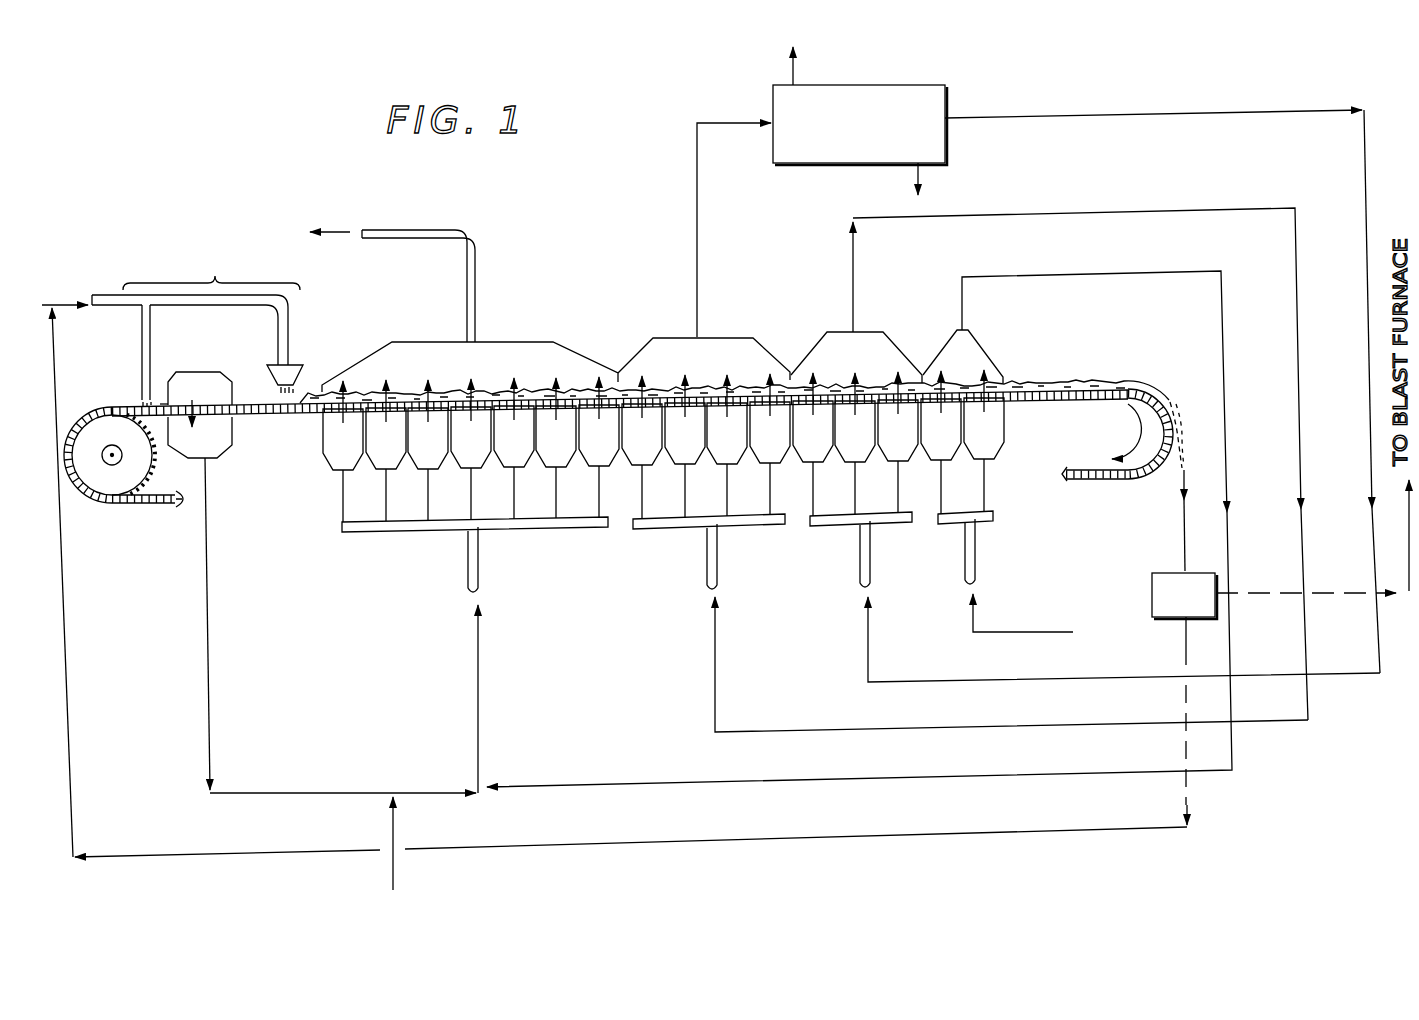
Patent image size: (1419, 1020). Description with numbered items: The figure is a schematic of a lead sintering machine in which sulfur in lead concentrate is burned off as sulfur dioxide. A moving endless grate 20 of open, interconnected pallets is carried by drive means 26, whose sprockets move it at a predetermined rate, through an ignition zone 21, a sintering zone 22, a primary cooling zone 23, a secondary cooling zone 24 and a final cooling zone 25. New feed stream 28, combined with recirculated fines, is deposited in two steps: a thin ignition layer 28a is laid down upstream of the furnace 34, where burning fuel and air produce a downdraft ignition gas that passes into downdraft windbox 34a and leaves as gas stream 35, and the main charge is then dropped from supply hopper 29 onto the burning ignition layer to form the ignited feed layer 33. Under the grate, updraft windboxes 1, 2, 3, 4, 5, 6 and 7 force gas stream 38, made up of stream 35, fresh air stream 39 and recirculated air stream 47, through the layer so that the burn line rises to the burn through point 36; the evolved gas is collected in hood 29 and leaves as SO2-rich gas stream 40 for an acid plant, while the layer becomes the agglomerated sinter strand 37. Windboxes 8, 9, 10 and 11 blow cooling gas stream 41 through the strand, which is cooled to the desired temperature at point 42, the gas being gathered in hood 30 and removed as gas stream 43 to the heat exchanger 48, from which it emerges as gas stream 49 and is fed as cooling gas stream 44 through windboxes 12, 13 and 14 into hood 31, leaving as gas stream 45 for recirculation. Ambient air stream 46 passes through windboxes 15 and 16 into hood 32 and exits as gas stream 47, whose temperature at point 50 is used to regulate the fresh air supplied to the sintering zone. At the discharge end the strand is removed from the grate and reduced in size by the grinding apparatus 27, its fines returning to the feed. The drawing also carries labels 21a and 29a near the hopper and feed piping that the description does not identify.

The updraft windbox 1 is at (343, 451).
The updraft windbox 2 is at (386, 450).
The updraft windbox 3 is at (428, 450).
The updraft windbox 4 is at (471, 449).
The updraft windbox 5 is at (514, 448).
The updraft windbox 6 is at (556, 448).
The updraft windbox 7 is at (599, 447).
The updraft windbox 8 is at (642, 447).
The updraft windbox 9 is at (685, 446).
The updraft windbox 10 is at (727, 445).
The updraft windbox 11 is at (770, 444).
The updraft windbox 12 is at (813, 444).
The updraft windbox 13 is at (855, 443).
The updraft windbox 14 is at (898, 442).
The updraft windbox 15 is at (941, 442).
The updraft windbox 16 is at (984, 441).
The endless grate 20 is at (125, 405).
The ignition zone 21 is at (196, 307).
The hopper discharge outlet 21a is at (235, 450).
The sintering zone 22 is at (527, 338).
The primary cooling zone 23 is at (730, 330).
The secondary cooling zone 24 is at (877, 327).
The final cooling zone 25 is at (987, 342).
The drive means 26 is at (107, 480).
The grinding apparatus 27 is at (1172, 607).
The new feed stream 28 is at (42, 303).
The ignition layer 28a is at (163, 403).
The supply hopper 29 is at (270, 363).
The feed branch conduit 29a is at (143, 368).
The hood 30 is at (691, 362).
The hood 31 is at (846, 362).
The hood 32 is at (954, 362).
The ignited feed layer 33 is at (308, 398).
The furnace 34 is at (190, 394).
The downdraft windbox 34a is at (200, 429).
The gas stream 35 is at (210, 630).
The burn through point 36 is at (620, 383).
The sinter strand 37 is at (633, 388).
The gas stream 38 is at (478, 690).
The air stream 39 is at (393, 825).
The gas stream 40 is at (408, 230).
The cooling gas stream 41 is at (712, 645).
The point 42 is at (792, 383).
The gas stream 43 is at (697, 224).
The cooling gas stream 44 is at (868, 650).
The gas stream 45 is at (905, 215).
The ambient air stream 46 is at (973, 615).
The gas stream 47 is at (1027, 275).
The heat exchanger 48 is at (847, 135).
The gas stream 49 is at (1110, 112).
The point 50 is at (1007, 378).